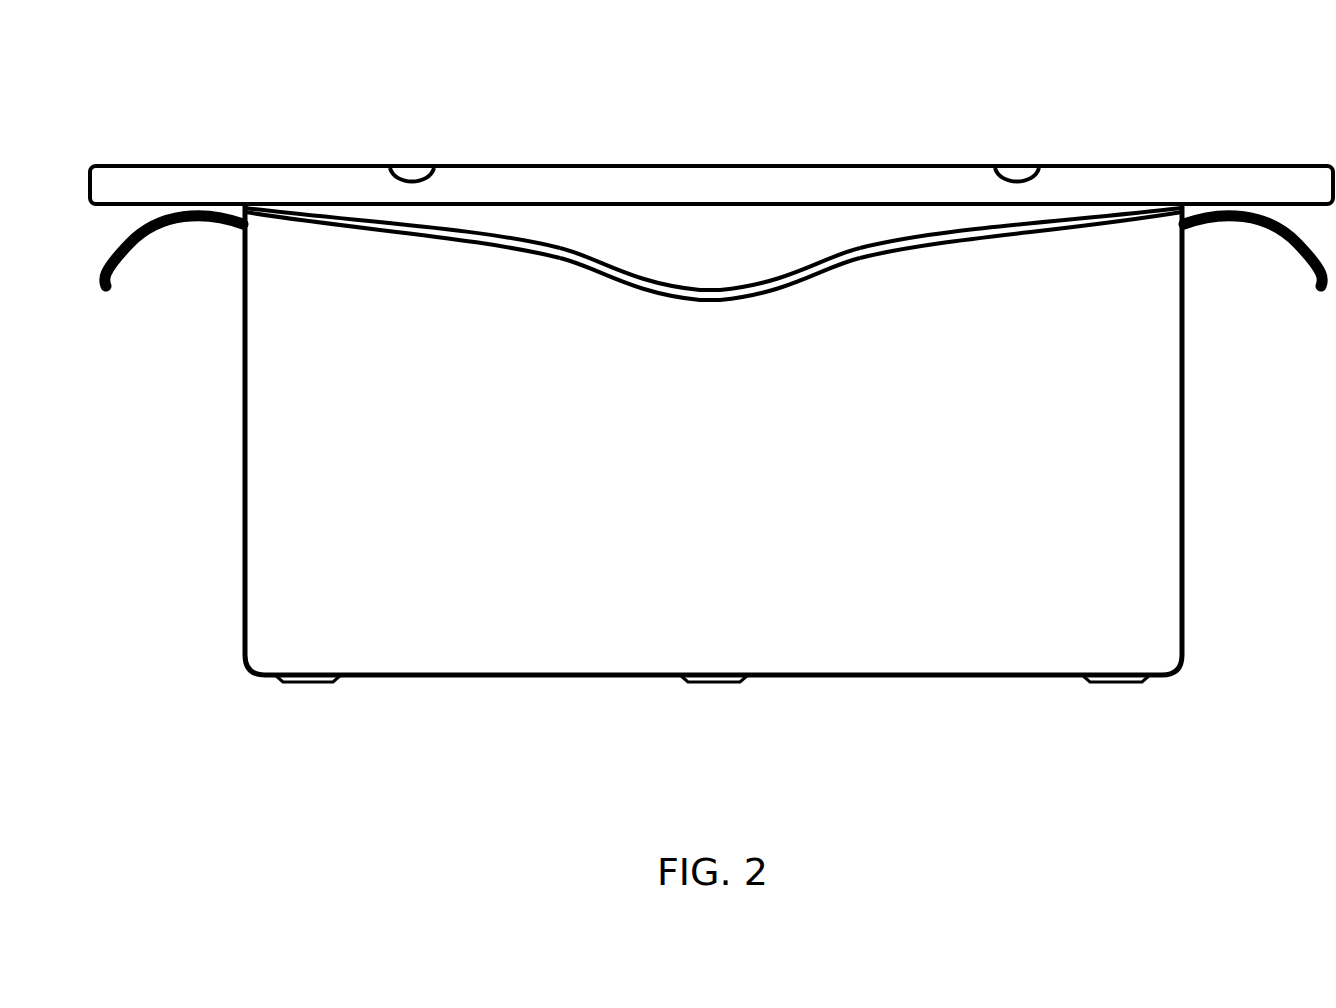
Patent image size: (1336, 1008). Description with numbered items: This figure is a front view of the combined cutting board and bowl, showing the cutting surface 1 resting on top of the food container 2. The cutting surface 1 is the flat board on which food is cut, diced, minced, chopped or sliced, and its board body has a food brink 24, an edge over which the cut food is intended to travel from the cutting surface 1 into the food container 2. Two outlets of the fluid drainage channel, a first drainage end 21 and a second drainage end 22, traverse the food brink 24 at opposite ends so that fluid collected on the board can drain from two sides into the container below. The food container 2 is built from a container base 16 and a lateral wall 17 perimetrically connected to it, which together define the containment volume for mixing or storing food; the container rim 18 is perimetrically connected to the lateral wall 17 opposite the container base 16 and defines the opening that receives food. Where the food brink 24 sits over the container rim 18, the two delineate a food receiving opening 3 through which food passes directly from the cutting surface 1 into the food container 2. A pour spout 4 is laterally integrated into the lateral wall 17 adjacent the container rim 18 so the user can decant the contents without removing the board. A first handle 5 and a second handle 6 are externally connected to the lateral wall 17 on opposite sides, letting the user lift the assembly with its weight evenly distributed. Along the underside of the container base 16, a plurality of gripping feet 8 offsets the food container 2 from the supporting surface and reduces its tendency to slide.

The cutting surface 1 is at (708, 411).
The food container 2 is at (633, 489).
The food receiving opening 3 is at (713, 266).
The pour spout 4 is at (678, 300).
The first handle 5 is at (143, 250).
The second handle 6 is at (1318, 292).
The plurality of gripping feet 8 is at (315, 683).
The container base 16 is at (475, 680).
The lateral wall 17 is at (272, 430).
The container rim 18 is at (982, 232).
The first drainage end 21 is at (413, 176).
The second drainage end 22 is at (1018, 176).
The food brink 24 is at (711, 143).